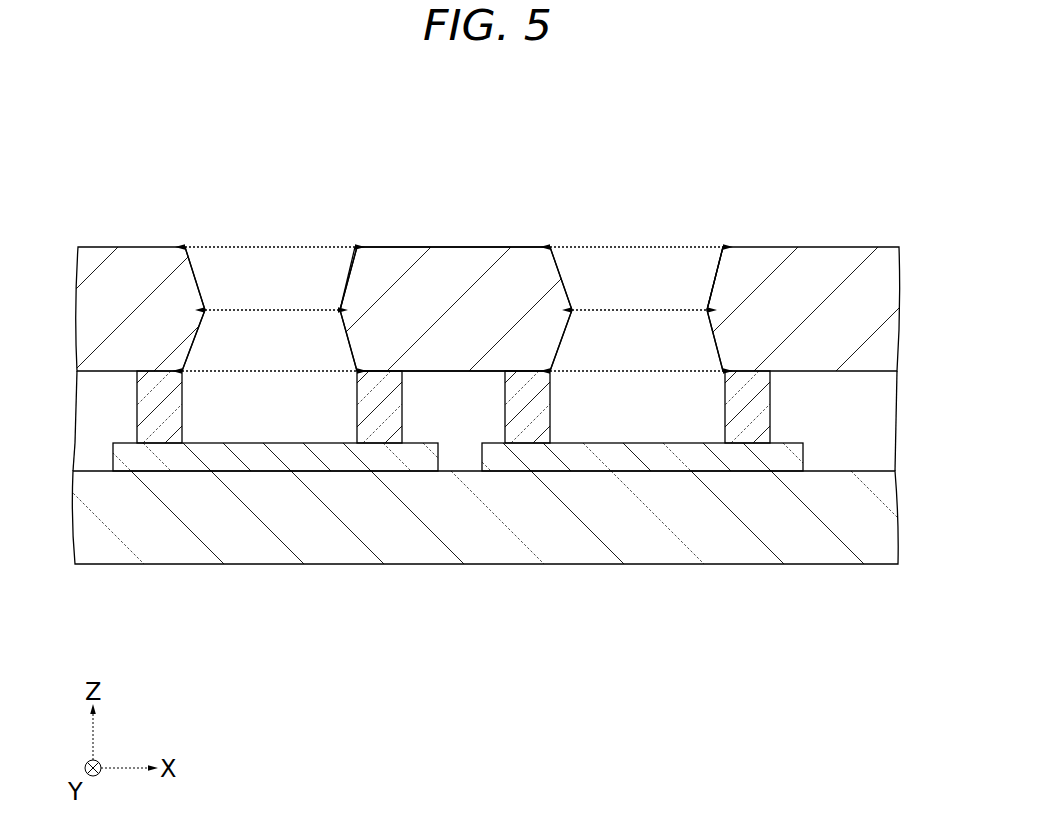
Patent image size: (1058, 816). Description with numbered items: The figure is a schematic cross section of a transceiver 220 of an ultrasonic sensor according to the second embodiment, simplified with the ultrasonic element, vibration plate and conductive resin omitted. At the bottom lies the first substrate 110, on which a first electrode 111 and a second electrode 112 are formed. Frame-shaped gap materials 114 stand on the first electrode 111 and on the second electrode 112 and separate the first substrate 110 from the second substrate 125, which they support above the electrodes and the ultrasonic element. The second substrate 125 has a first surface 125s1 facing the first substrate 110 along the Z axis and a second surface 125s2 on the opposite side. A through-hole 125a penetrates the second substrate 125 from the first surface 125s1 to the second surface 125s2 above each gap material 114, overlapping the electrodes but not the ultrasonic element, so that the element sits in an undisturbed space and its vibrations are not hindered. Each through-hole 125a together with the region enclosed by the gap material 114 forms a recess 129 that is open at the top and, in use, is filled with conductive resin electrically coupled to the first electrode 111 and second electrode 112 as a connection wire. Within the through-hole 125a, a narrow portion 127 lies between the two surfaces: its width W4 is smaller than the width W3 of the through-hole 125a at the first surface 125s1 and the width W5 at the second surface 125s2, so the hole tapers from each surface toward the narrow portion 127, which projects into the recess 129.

The transceiver 220 is at (861, 88).
The first substrate 110 is at (464, 548).
The first electrode 111 is at (650, 460).
The second electrode 112 is at (263, 460).
The gap material 114 is at (162, 435).
The second substrate 125 is at (137, 257).
The through-hole 125a is at (340, 272).
The first surface 125s1 is at (421, 378).
The second surface 125s2 is at (492, 247).
The narrow portion 127 is at (207, 313).
The recess 129 is at (281, 260).
The width of the through-hole in the first surface W3 is at (268, 374).
The width of the narrow portion W4 is at (268, 313).
The width of the through-hole in the second surface W5 is at (220, 247).